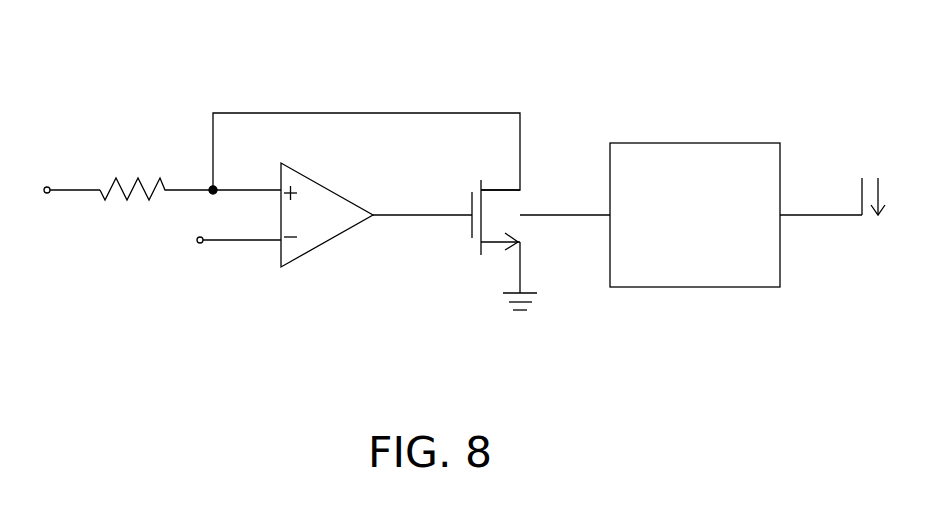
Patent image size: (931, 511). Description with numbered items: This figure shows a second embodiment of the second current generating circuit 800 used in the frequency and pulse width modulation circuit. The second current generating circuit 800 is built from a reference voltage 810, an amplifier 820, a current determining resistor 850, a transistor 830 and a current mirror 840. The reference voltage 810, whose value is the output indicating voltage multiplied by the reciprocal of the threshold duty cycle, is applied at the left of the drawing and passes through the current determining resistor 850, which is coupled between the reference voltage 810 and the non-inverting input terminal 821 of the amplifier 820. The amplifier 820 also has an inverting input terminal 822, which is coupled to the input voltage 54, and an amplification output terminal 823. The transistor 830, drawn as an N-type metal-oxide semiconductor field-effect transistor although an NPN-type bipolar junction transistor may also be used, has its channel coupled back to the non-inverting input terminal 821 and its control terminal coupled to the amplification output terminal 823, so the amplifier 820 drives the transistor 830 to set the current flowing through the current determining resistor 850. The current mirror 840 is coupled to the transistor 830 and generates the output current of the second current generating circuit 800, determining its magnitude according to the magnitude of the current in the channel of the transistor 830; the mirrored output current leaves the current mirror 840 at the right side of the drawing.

The second current generating circuit 800 is at (862, 40).
The reference voltage 810 is at (47, 186).
The current determining resistor 850 is at (140, 177).
The input voltage 54 is at (197, 240).
The amplifier 820 is at (345, 226).
The non-inverting input terminal 821 is at (280, 188).
The inverting input terminal 822 is at (280, 243).
The amplification output terminal 823 is at (374, 217).
The transistor 830 is at (516, 190).
The current mirror 840 is at (715, 250).